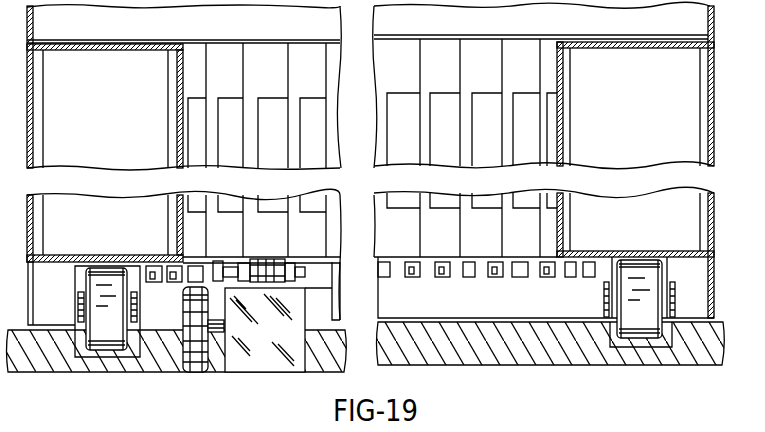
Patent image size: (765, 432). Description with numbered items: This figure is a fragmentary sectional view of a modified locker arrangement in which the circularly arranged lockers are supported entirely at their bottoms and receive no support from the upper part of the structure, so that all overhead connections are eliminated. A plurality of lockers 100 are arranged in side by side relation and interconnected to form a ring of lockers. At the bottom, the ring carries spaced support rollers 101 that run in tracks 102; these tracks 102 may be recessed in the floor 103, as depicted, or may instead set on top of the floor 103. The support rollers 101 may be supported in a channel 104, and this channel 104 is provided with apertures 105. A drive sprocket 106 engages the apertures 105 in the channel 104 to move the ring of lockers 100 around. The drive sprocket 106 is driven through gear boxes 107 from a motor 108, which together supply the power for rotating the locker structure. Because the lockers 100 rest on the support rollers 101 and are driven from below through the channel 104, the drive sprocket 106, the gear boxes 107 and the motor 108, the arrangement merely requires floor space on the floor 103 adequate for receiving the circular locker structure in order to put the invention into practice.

The lockers 100 is at (180, 127).
The support rollers 101 is at (112, 351).
The tracks 102 is at (123, 357).
The floor 103 is at (510, 368).
The channel 104 is at (72, 279).
The apertures 105 is at (172, 277).
The drive sprocket 106 is at (287, 282).
The gear boxes 107 is at (273, 362).
The motor 108 is at (197, 356).